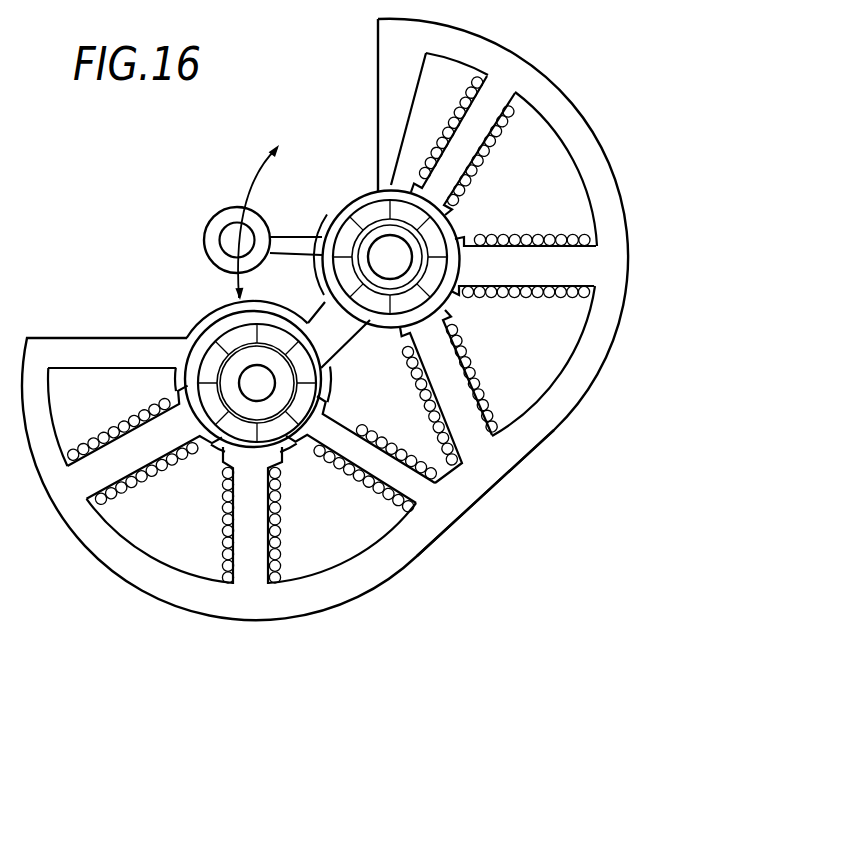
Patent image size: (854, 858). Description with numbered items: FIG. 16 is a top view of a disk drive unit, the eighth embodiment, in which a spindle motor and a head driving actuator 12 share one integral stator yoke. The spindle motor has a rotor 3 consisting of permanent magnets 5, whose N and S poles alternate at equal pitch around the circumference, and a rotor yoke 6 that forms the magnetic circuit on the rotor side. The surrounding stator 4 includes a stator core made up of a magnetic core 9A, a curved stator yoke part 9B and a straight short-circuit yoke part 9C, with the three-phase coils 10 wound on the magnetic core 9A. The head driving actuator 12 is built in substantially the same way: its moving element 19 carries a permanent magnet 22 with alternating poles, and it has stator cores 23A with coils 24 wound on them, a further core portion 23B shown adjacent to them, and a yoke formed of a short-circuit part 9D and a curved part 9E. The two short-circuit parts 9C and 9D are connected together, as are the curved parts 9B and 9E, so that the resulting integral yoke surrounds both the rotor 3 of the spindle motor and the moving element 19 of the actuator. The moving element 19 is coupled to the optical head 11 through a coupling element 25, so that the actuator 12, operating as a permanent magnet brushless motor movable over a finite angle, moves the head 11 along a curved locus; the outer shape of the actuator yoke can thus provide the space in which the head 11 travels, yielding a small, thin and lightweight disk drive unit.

The rotor 3 is at (305, 385).
The stator 4 is at (228, 719).
The permanent magnets 5 is at (205, 358).
The rotor yoke 6 is at (213, 423).
The magnetic core 9A is at (245, 545).
The curved stator yoke part 9B is at (233, 612).
The straight-circuit yoke part 9C is at (97, 342).
The short-circuit part 9D is at (376, 88).
The curved part 9E is at (577, 389).
The coils 10 is at (275, 537).
The optical head 11 is at (212, 230).
The head driving actuator 12 is at (574, 102).
The moving element 19 is at (447, 224).
The permanent magnet 22 is at (355, 185).
The stator cores 23A is at (523, 266).
The stator flux path 23B is at (405, 118).
The coils 24 is at (518, 238).
The coupling element 25 is at (301, 237).